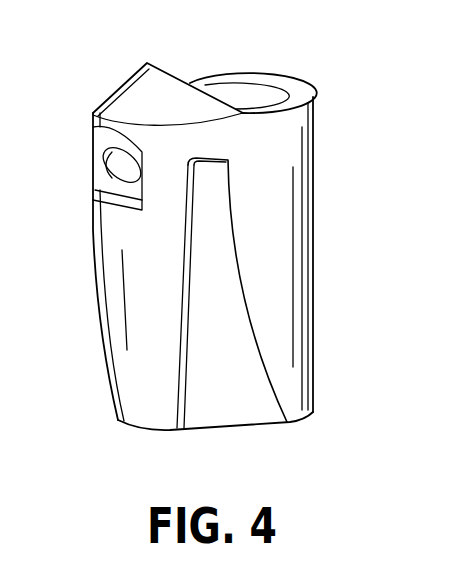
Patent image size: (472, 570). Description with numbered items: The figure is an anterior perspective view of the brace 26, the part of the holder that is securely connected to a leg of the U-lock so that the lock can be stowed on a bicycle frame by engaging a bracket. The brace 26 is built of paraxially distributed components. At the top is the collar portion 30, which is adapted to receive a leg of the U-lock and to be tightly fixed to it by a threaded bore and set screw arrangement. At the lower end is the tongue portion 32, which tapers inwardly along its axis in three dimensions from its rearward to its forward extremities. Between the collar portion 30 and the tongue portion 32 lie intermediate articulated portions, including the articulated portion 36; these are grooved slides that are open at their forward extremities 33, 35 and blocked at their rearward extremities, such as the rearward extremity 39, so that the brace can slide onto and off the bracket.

The brace 26 is at (351, 253).
The collar portion 30 is at (262, 95).
The tongue portion 32 is at (118, 311).
The forward extremity 33 is at (127, 423).
The forward extremity 35 is at (200, 420).
The articulated portion 36 is at (237, 410).
The rearward extremity 39 is at (213, 235).